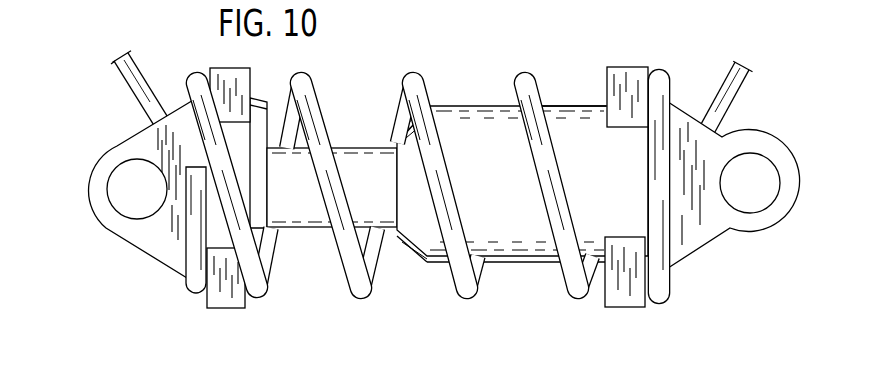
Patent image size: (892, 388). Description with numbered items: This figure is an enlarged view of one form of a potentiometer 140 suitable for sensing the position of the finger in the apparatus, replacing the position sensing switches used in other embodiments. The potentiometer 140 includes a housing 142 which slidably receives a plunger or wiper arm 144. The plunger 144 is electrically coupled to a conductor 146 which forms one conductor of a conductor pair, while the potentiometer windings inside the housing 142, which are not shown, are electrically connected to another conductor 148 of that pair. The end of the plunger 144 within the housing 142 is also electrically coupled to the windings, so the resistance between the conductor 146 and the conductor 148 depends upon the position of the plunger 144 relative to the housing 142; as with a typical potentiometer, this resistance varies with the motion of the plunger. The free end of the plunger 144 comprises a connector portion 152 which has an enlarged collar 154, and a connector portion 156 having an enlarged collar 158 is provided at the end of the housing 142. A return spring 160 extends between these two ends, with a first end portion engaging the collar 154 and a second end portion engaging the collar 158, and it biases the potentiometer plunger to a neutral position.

The potentiometer 140 is at (564, 101).
The housing 142 is at (457, 122).
The plunger 144 is at (358, 163).
The conductor 146 is at (134, 93).
The conductor 148 is at (720, 88).
The connector portion 152 is at (141, 233).
The enlarged collar 154 is at (222, 310).
The connector portion 156 is at (731, 130).
The enlarged collar 158 is at (627, 307).
The return spring 160 is at (313, 90).